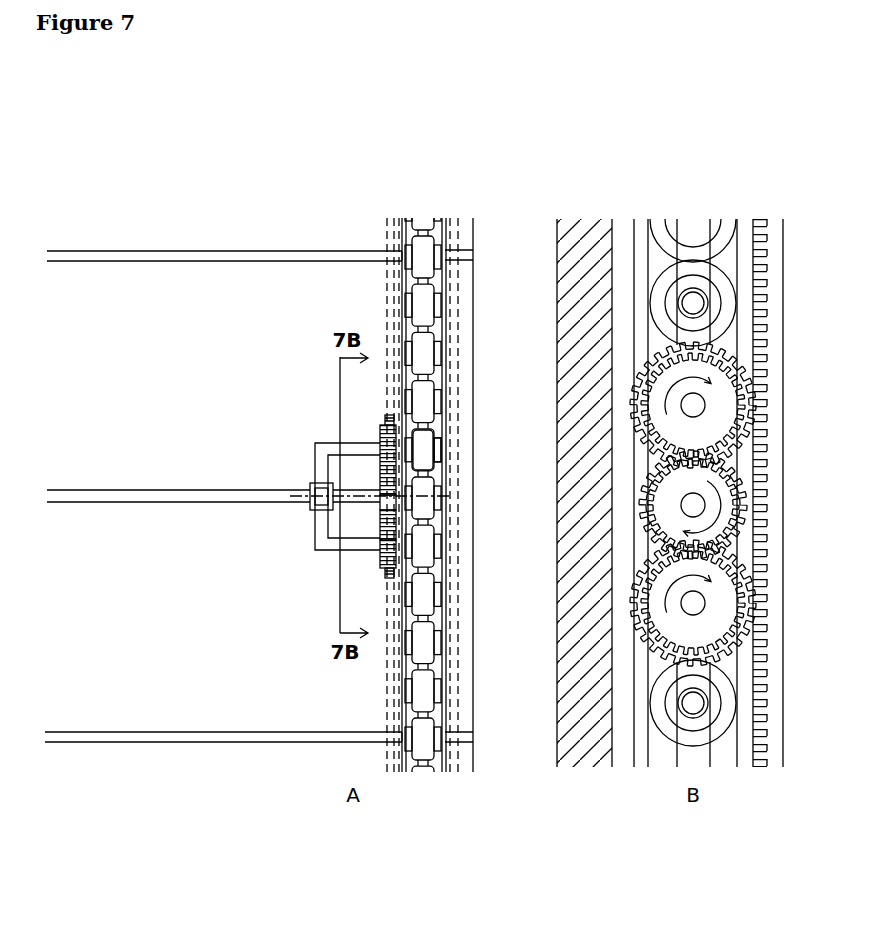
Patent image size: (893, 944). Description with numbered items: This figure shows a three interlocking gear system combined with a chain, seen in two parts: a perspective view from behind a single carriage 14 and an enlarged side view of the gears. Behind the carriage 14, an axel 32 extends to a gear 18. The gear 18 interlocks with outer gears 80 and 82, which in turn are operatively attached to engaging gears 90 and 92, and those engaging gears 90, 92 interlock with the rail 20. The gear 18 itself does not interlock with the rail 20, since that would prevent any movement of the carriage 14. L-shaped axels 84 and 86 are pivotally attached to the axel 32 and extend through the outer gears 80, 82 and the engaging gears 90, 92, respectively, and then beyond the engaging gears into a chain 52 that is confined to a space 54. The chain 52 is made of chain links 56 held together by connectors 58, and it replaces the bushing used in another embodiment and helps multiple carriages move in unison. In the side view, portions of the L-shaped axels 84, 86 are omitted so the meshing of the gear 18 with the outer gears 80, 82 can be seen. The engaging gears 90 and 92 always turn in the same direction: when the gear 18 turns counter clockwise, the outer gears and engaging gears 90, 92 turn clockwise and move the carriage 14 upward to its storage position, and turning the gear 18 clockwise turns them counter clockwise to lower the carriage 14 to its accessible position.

The carriage 14 is at (160, 396).
The rail 20 is at (393, 301).
The axel 32 is at (122, 491).
The L-shaped axel 86 is at (315, 445).
The engaging gear 92 is at (385, 420).
The outer gear 82 is at (382, 432).
The gear 18 is at (378, 507).
The L-shaped axel 84 is at (378, 543).
The outer gear 80 is at (378, 565).
The engaging gear 90 is at (387, 574).
The chain 52 is at (428, 457).
The space 54 is at (432, 474).
The chain link 56 is at (737, 290).
The connector 58 is at (705, 748).